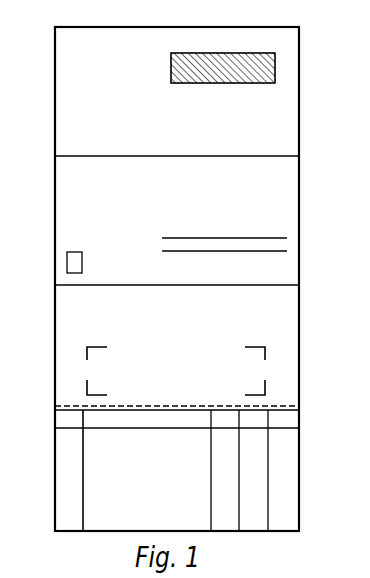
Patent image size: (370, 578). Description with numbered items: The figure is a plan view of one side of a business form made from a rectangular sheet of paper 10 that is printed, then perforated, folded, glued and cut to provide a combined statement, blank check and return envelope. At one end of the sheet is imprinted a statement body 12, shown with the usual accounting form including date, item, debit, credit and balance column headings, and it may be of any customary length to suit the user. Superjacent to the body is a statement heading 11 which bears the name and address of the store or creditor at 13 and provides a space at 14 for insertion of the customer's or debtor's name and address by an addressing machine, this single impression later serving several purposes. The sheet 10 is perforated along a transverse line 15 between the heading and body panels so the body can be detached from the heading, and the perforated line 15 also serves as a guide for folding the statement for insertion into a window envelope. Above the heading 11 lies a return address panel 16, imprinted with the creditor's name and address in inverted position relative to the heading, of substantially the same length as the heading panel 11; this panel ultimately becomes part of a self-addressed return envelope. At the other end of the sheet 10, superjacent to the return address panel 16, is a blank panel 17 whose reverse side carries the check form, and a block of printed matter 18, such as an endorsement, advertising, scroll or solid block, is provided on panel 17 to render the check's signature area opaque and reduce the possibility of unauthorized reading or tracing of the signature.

The sheet of paper 10 is at (302, 105).
The statement heading 11 is at (292, 363).
The statement body 12 is at (288, 480).
The name and address of the store or creditor 13 is at (118, 318).
The space for insertion of the name and address of the customer 14 is at (112, 368).
The transverse perforated line 15 is at (267, 405).
The return address panel 16 is at (83, 210).
The blank panel 17 is at (80, 95).
The block of printed matter 18 is at (267, 69).